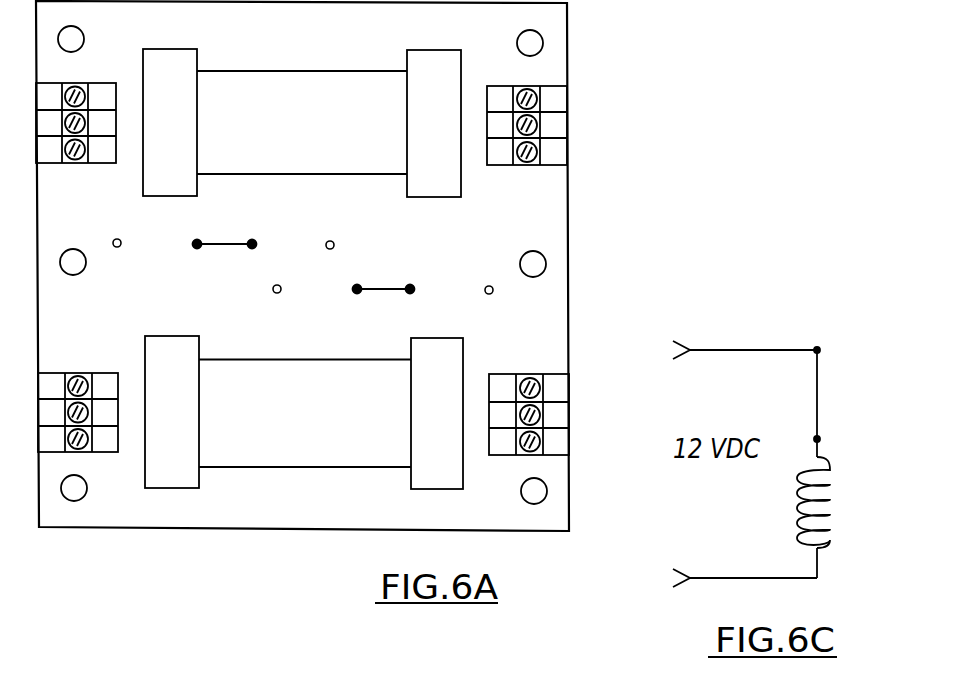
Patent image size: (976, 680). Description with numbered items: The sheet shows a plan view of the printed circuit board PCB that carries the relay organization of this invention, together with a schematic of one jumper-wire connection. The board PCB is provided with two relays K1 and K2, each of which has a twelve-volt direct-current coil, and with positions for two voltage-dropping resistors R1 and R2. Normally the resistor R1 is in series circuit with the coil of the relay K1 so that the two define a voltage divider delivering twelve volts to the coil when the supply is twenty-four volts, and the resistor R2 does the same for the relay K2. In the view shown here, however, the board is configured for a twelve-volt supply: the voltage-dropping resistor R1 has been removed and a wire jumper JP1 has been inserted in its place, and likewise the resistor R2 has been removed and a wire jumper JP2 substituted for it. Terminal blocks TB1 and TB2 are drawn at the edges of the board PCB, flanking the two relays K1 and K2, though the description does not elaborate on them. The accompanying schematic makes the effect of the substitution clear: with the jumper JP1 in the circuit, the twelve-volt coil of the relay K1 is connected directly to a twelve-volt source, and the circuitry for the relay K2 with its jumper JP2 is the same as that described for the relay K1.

In FIG. 6A, the printed circuit board PCB is at (567, 212).
In FIG. 6A, the terminal block TB1 is at (528, 270).
In FIG. 6A, the terminal block TB2 is at (77, 267).
In FIG. 6A, the relay K1 is at (305, 132).
In FIG. 6C, the relay K1 is at (836, 497).
In FIG. 6A, the relay K2 is at (307, 408).
In FIG. 6A, the wire jumper JP1 is at (225, 229).
In FIG. 6C, the wire jumper JP1 is at (821, 401).
In FIG. 6A, the wire jumper JP2 is at (384, 276).
In FIG. 6A, the voltage-dropping resistor R1 is at (165, 309).
In FIG. 6A, the voltage-dropping resistor R2 is at (431, 232).